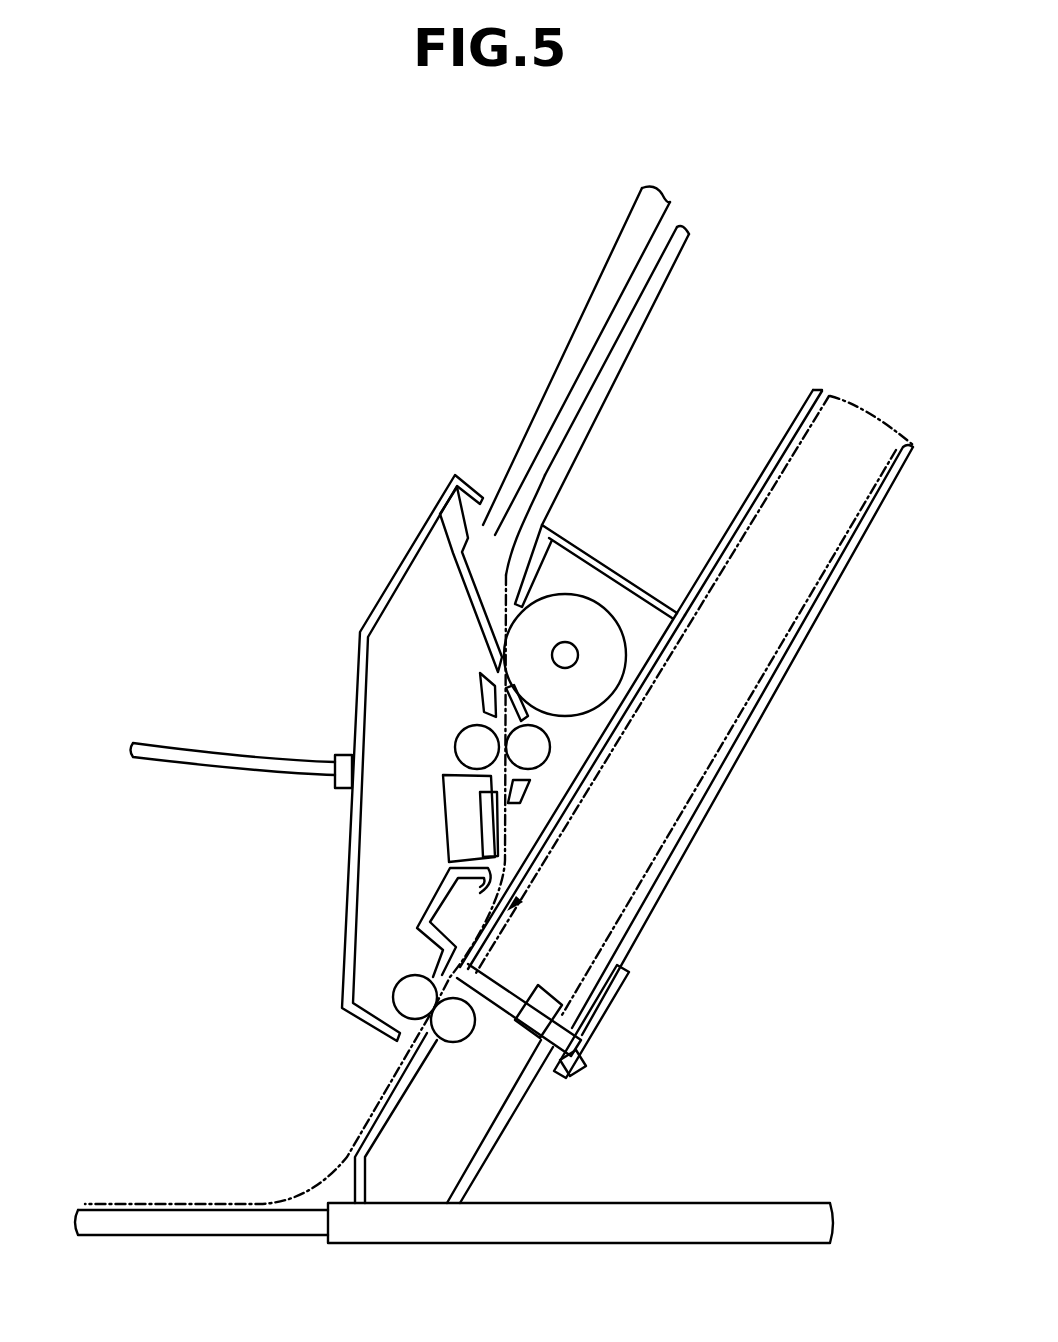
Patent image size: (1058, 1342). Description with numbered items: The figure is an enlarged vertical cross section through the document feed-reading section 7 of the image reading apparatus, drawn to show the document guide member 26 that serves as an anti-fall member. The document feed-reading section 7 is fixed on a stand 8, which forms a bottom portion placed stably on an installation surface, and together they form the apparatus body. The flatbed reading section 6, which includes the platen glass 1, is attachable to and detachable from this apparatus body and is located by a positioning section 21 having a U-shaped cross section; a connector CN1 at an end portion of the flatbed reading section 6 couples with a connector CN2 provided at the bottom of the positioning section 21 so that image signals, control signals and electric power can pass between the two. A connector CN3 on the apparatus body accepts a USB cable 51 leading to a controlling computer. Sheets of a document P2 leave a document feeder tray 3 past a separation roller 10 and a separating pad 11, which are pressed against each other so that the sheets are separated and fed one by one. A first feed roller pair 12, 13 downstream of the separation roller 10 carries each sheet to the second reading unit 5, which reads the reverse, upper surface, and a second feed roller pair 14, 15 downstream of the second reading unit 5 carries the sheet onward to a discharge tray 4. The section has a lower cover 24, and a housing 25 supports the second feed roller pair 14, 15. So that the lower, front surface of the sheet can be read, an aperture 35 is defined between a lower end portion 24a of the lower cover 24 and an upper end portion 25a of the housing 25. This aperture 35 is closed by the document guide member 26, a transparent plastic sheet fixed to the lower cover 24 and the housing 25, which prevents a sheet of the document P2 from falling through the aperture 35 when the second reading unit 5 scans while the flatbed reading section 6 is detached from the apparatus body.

The platen glass 1 is at (783, 458).
The document feeder tray 3 is at (622, 355).
The discharge tray 4 is at (172, 1224).
The second reading unit 5 is at (483, 811).
The flatbed reading section 6 is at (828, 600).
The document feed-reading section 7 is at (364, 718).
The stand 8 is at (770, 1215).
The separation roller 10 is at (600, 656).
The separating pad 11 is at (475, 648).
The first feed roller 12 is at (530, 747).
The first feed roller 13 is at (478, 745).
The second feed roller 14 is at (462, 1030).
The second feed roller 15 is at (408, 997).
The positioning section 21 is at (590, 964).
The lower cover 24 is at (617, 580).
The lower end portion 24a is at (530, 853).
The housing 25 is at (498, 1130).
The upper end portion 25a is at (490, 962).
The document guide member 26 is at (520, 908).
The aperture 35 is at (488, 870).
The USB cable 51 is at (180, 752).
The connector CN1 is at (550, 988).
The connector CN2 is at (575, 1063).
The connector CN3 is at (337, 762).
The document P2 is at (608, 277).